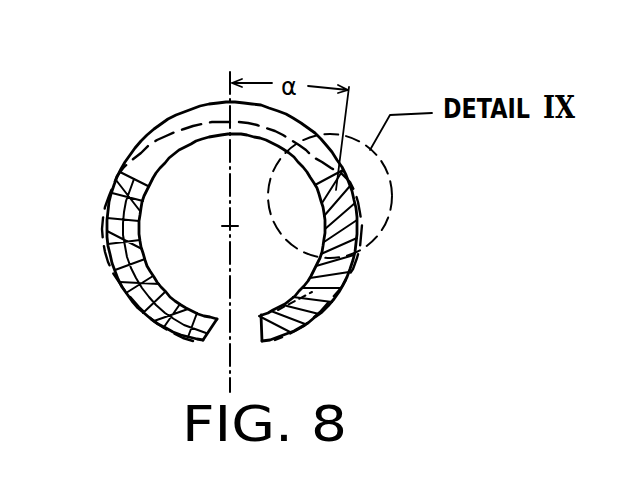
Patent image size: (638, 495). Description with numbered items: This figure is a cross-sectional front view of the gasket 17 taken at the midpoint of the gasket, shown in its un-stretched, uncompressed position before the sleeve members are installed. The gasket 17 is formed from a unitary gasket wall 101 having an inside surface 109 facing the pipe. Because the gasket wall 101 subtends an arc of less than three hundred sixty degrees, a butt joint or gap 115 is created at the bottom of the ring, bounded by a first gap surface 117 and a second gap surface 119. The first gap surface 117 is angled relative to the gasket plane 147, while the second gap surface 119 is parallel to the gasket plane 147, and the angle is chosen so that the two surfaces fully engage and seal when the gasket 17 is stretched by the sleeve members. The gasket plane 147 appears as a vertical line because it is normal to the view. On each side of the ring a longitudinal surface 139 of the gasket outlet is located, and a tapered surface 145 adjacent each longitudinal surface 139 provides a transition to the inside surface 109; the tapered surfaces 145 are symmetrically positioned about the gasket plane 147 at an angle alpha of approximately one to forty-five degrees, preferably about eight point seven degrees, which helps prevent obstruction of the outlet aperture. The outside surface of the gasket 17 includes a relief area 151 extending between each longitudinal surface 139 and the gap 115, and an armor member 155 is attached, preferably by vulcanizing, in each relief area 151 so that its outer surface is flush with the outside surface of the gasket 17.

The gasket 17 is at (147, 42).
The gasket wall 101 is at (153, 145).
The longitudinal surface 139 is at (120, 172).
The tapered surface 145 is at (139, 201).
The gasket plane 147 is at (232, 276).
The inside surface 109 is at (312, 280).
The relief area 151 is at (117, 262).
The armor member 155 is at (128, 303).
The first gap surface 117 is at (206, 337).
The second gap surface 119 is at (266, 345).
The gap 115 is at (218, 364).